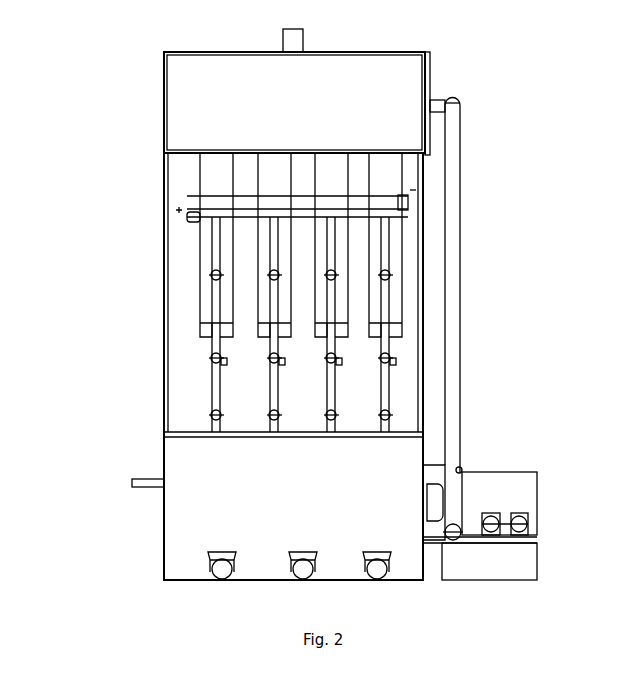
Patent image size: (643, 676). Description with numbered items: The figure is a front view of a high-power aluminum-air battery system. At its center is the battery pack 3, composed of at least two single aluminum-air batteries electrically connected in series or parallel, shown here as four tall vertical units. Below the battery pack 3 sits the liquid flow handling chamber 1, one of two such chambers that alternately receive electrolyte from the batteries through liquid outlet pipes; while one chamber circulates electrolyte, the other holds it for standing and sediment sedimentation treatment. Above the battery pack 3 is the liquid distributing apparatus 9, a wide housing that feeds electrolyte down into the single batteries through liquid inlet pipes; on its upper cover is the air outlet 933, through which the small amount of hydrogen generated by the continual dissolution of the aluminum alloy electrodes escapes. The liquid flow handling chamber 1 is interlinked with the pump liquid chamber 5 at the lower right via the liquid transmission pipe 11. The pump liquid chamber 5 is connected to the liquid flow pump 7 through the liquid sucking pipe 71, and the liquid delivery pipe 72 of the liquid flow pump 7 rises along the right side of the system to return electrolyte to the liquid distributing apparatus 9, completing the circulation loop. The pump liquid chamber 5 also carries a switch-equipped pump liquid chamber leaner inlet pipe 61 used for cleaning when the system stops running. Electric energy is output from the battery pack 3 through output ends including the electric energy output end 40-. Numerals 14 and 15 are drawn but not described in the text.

The liquid flow handling chamber 1 is at (200, 463).
The battery pack 3 is at (200, 272).
The pump liquid chamber 5 is at (506, 565).
The liquid flow pump 7 is at (521, 479).
The liquid distributing apparatus 9 is at (200, 107).
The liquid transmission pipe 11 is at (455, 490).
The inlet pipe 14 is at (130, 483).
The wheels 15 is at (212, 569).
The electric energy output end 40- is at (408, 202).
The pump liquid chamber leaner inlet pipe 61 is at (507, 512).
The liquid sucking pipe 71 is at (525, 530).
The liquid delivery pipe 72 is at (453, 245).
The air outlet 933 is at (293, 37).